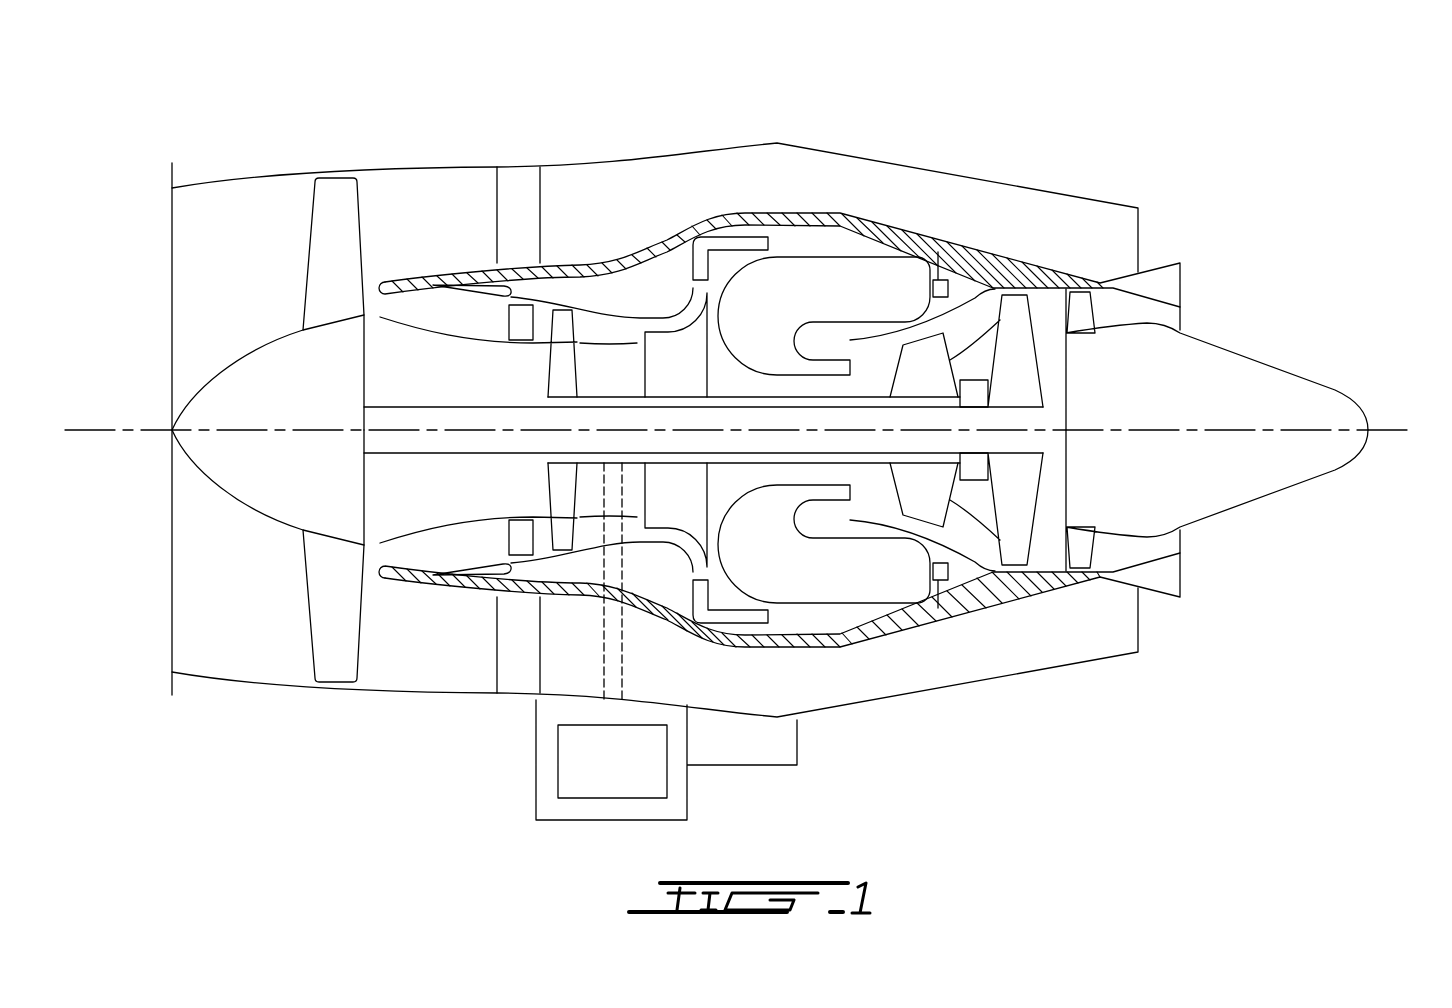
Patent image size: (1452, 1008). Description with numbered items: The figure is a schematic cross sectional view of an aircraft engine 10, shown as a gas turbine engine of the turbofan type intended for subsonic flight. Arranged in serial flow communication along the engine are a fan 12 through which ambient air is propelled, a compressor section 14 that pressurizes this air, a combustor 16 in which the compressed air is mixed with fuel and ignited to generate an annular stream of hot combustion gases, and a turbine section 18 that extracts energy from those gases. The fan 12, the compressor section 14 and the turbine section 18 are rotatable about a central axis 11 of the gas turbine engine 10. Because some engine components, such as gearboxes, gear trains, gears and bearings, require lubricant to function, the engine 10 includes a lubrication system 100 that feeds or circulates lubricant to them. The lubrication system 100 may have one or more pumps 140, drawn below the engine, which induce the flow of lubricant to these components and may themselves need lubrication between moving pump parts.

The aircraft engine 10 is at (1032, 134).
The central axis 11 is at (1407, 428).
The fan 12 is at (327, 593).
The compressor section 14 is at (598, 323).
The combustor 16 is at (832, 280).
The turbine section 18 is at (970, 500).
The lubrication system 100 is at (486, 779).
The pump 140 is at (596, 798).